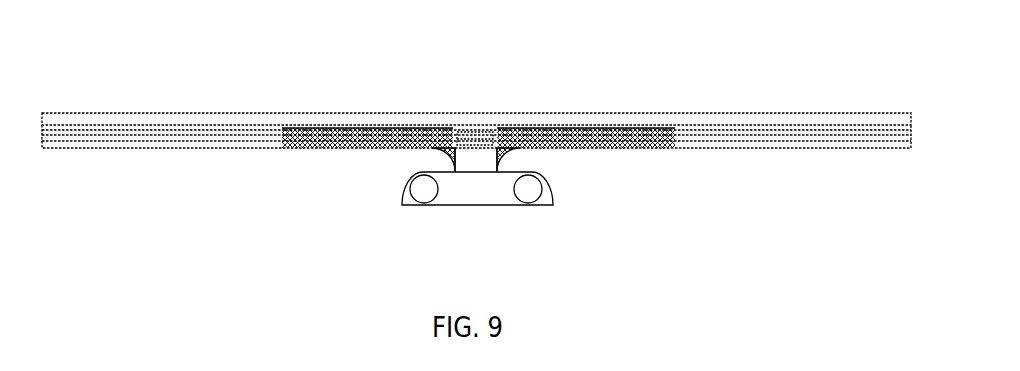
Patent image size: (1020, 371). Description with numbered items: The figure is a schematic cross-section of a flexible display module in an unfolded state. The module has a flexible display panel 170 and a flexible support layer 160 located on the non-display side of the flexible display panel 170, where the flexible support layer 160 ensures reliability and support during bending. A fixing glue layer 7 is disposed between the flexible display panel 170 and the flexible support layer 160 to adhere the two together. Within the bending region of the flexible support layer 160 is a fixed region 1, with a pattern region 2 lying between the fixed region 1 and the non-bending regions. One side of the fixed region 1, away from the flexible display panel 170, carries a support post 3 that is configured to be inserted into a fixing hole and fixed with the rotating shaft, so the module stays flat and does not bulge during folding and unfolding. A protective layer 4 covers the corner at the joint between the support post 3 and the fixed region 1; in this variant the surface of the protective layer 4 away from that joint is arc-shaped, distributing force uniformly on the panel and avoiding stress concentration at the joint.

The flexible display panel 170 is at (108, 118).
The fixing glue layer 7 is at (220, 126).
The flexible support layer 160 is at (105, 143).
The pattern region 2 is at (308, 143).
The fixed region 1 is at (485, 135).
The support post 3 is at (476, 157).
The protective layer 4 is at (437, 158).